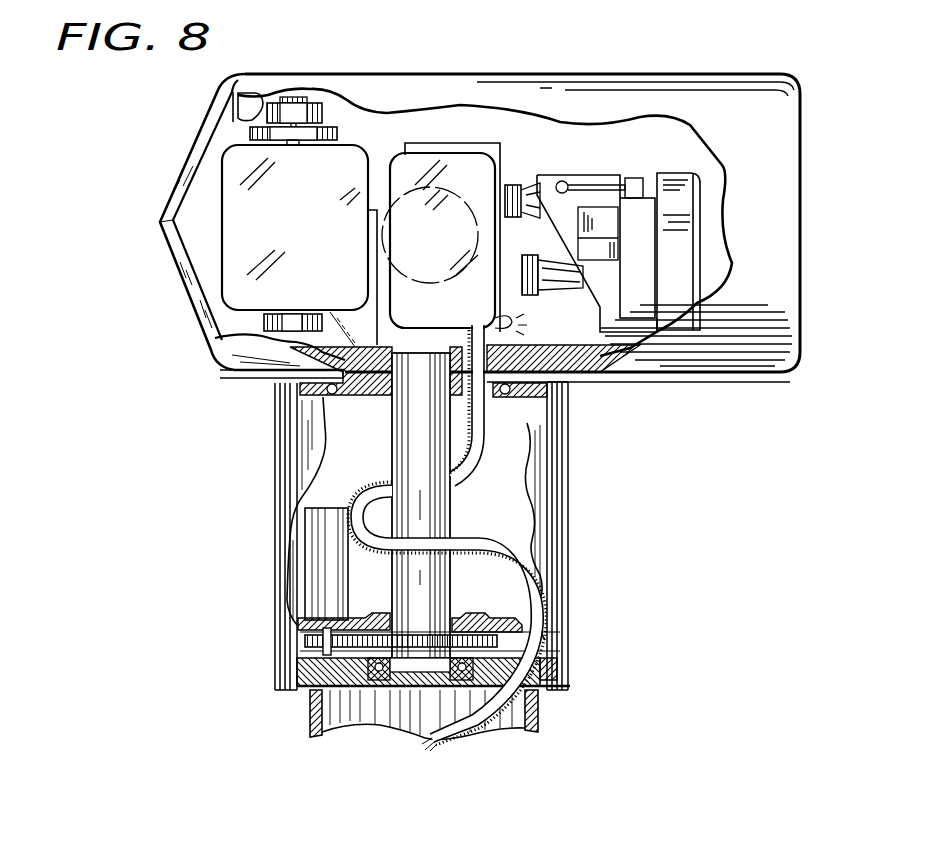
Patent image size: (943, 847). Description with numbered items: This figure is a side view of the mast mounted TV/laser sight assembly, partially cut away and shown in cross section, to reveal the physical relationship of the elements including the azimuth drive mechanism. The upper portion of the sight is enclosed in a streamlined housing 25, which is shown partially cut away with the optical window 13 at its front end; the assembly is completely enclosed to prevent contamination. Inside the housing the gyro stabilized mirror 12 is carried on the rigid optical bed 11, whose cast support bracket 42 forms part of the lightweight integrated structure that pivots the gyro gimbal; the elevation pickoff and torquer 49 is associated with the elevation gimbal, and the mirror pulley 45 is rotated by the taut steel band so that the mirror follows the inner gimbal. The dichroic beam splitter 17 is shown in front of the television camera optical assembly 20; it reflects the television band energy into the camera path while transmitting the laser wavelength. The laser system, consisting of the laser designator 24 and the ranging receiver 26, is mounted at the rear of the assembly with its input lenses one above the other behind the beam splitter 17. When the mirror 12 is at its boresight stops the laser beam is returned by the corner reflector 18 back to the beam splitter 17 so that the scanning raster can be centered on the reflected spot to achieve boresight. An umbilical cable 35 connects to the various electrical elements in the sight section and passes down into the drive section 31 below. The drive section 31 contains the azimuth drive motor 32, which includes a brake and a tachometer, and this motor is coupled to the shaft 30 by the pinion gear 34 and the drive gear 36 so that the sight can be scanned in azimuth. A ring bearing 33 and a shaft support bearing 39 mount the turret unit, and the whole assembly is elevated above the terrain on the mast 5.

The mast 5 is at (310, 704).
The optical bed 11 is at (357, 398).
The stabilized mirror 12 is at (358, 165).
The optical window 13 is at (185, 163).
The dichroic beam splitter 17 is at (488, 177).
The corner reflector 18 is at (240, 100).
The television camera optical assembly 20 is at (385, 235).
The laser designator 24 is at (537, 185).
The streamlined housing 25 is at (655, 80).
The ranging receiver 26 is at (566, 284).
The shaft 30 is at (405, 440).
The drive section 31 is at (569, 495).
The azimuth drive motor 32 is at (313, 545).
The ring bearing 33 is at (320, 398).
The pinion gear 34 is at (305, 642).
The umbilical cable 35 is at (487, 545).
The drive gear 36 is at (485, 620).
The shaft support bearing 39 is at (384, 675).
The support bracket 42 is at (358, 316).
The mirror pulley 45 is at (336, 131).
The elevation pickoff and torquer 49 is at (292, 103).